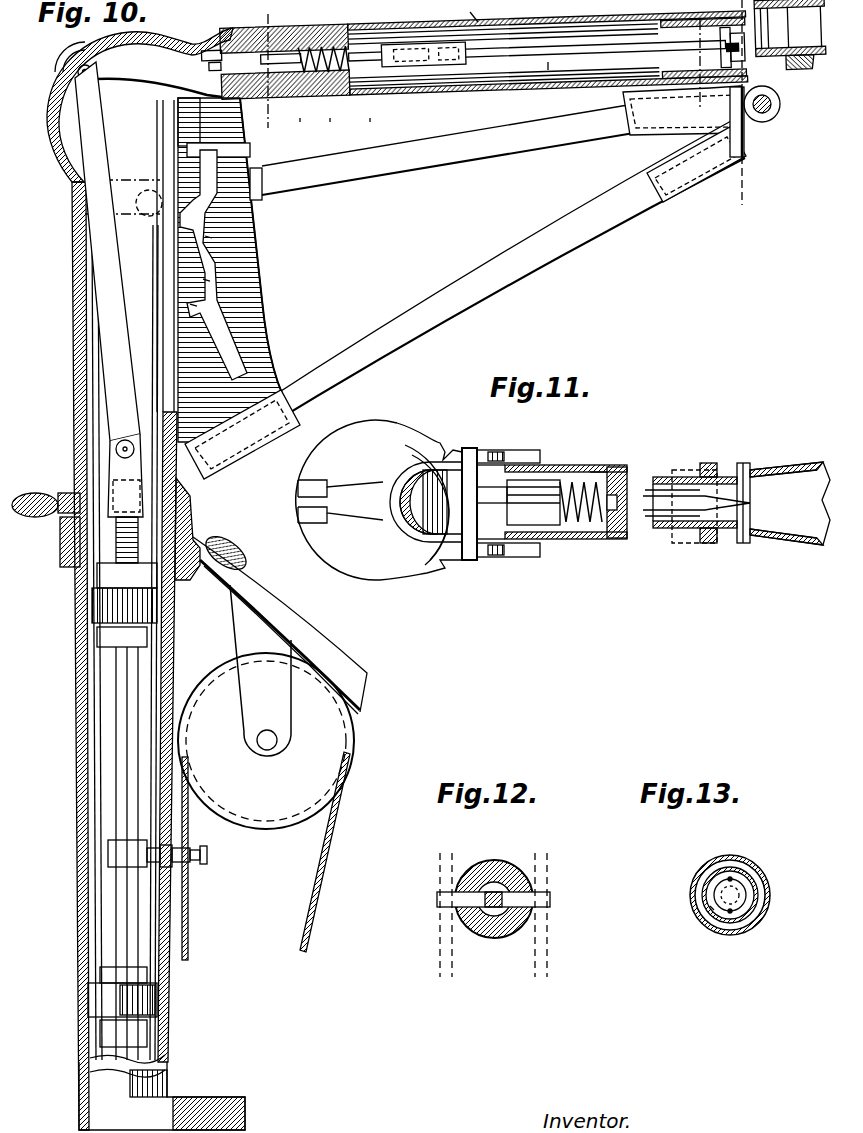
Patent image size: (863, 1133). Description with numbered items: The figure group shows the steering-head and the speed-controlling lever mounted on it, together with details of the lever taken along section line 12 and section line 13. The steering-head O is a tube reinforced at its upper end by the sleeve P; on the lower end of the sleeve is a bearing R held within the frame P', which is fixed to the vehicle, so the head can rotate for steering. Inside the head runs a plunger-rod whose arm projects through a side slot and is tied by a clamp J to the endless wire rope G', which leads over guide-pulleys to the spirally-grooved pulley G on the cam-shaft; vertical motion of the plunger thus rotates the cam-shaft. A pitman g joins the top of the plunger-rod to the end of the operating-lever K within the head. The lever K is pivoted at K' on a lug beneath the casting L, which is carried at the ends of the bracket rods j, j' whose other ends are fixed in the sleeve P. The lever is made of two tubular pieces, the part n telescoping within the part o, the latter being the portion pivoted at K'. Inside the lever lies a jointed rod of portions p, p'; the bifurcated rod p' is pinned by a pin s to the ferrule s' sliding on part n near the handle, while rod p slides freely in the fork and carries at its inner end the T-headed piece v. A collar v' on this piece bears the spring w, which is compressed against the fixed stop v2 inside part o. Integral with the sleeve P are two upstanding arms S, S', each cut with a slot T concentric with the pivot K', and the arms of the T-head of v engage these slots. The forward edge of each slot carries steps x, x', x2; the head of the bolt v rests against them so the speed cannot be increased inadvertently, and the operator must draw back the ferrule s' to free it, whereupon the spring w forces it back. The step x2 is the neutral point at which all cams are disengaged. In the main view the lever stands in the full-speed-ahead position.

In FIG. 10, the section line 12 12 is at (268, 72).
In FIG. 10, the section line 13 13 is at (726, 113).
In FIG. 10, the pitman g is at (103, 259).
In FIG. 10, the sleeve P is at (142, 615).
In FIG. 10, the bearing R is at (62, 548).
In FIG. 10, the steering-head O is at (75, 690).
In FIG. 11, the steering-head O is at (379, 500).
In FIG. 10, the clamp J is at (112, 855).
In FIG. 10, the spirally-grooved pulley G is at (199, 858).
In FIG. 10, the endless wire rope G' is at (329, 852).
In FIG. 10, the frame P' is at (272, 673).
In FIG. 10, the step x is at (235, 270).
In FIG. 10, the upstanding arm S is at (230, 265).
In FIG. 11, the upstanding arm S is at (508, 438).
In FIG. 12, the upstanding arm S is at (555, 915).
In FIG. 10, the step x' is at (252, 251).
In FIG. 10, the slot T is at (205, 280).
In FIG. 11, the slot T is at (452, 590).
In FIG. 10, the step or notch x2 is at (193, 305).
In FIG. 10, the operating-lever K is at (474, 68).
In FIG. 11, the operating-lever K is at (552, 521).
In FIG. 10, the pivot K' is at (755, 126).
In FIG. 10, the bracket rod j is at (502, 140).
In FIG. 10, the bracket rod j' is at (465, 297).
In FIG. 10, the casting L is at (681, 124).
In FIG. 10, the cap q is at (469, 11).
In FIG. 10, the rod p is at (544, 73).
In FIG. 11, the rod p is at (691, 483).
In FIG. 13, the rod p is at (757, 895).
In FIG. 10, the bifurcated rod p' is at (774, 104).
In FIG. 11, the bifurcated rod p' is at (691, 539).
In FIG. 10, the telescoping tubular piece n is at (790, 52).
In FIG. 11, the telescoping tubular piece n is at (665, 533).
In FIG. 13, the telescoping tubular piece n is at (750, 872).
In FIG. 10, the T-headed piece v is at (301, 129).
In FIG. 11, the T-headed piece v is at (518, 532).
In FIG. 12, the T-headed piece v is at (493, 933).
In FIG. 10, the collar v' is at (330, 129).
In FIG. 11, the collar v' is at (539, 534).
In FIG. 10, the spring w is at (370, 129).
In FIG. 11, the spring w is at (571, 478).
In FIG. 11, the tubular portion o is at (592, 467).
In FIG. 12, the tubular portion o is at (497, 861).
In FIG. 13, the tubular portion o is at (700, 882).
In FIG. 11, the fixed stop v2 is at (614, 470).
In FIG. 13, the fixed stop v2 is at (712, 908).
In FIG. 11, the pin s is at (790, 520).
In FIG. 11, the ferrule s' is at (735, 520).
In FIG. 11, the upstanding arm S' is at (501, 578).
In FIG. 12, the upstanding arm S' is at (427, 915).